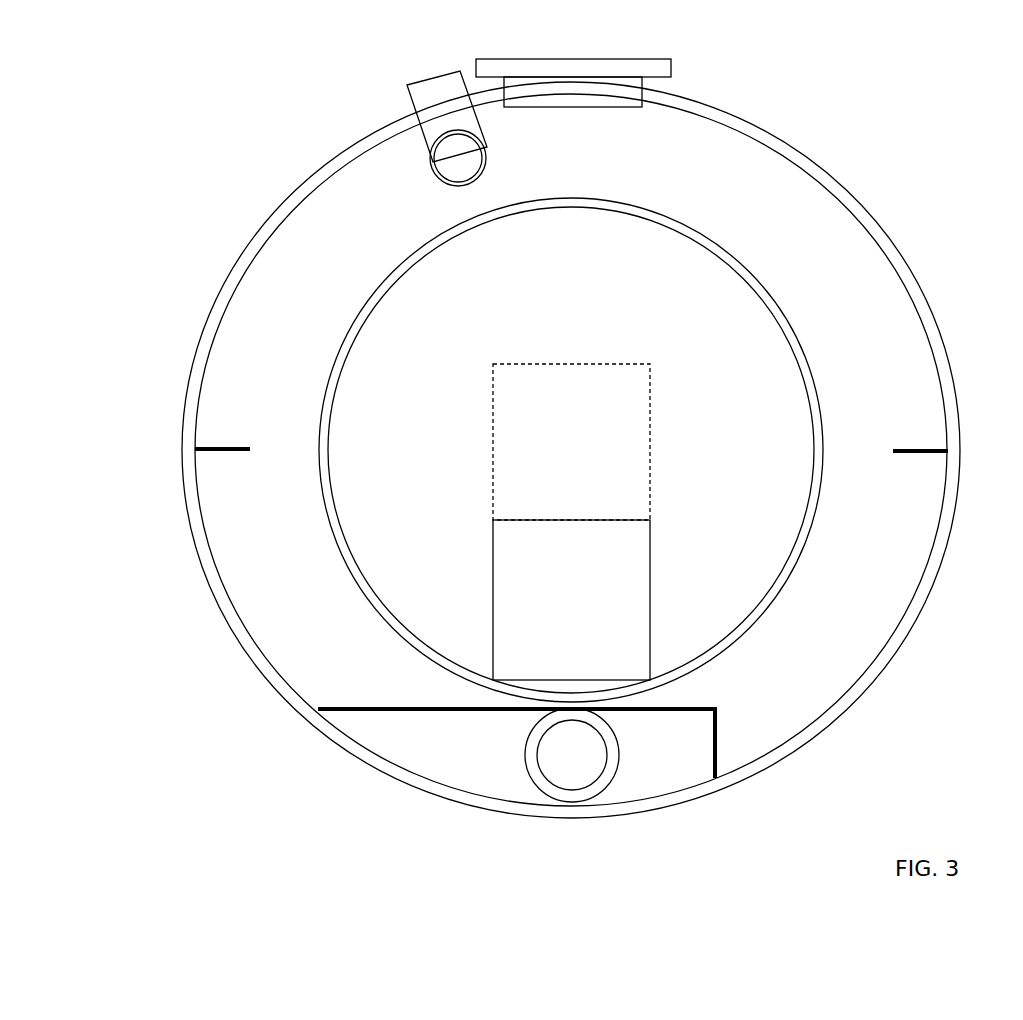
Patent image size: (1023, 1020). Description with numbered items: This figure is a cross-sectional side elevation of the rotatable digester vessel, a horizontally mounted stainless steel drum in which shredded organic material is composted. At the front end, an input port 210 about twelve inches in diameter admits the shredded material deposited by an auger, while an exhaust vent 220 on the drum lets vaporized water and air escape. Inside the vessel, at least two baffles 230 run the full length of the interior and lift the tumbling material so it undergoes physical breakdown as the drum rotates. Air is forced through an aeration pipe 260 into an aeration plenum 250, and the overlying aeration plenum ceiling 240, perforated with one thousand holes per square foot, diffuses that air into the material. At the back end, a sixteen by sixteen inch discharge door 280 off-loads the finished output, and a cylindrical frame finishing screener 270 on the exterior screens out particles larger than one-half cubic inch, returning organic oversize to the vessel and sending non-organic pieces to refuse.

The input port 210 is at (613, 63).
The exhaust vent 220 is at (423, 87).
The baffles 230 is at (218, 447).
The aeration plenum ceiling 240 is at (340, 713).
The aeration plenum 250 is at (469, 775).
The aeration pipe 260 is at (598, 778).
The finishing screener 270 is at (817, 393).
The discharge door 280 is at (640, 545).